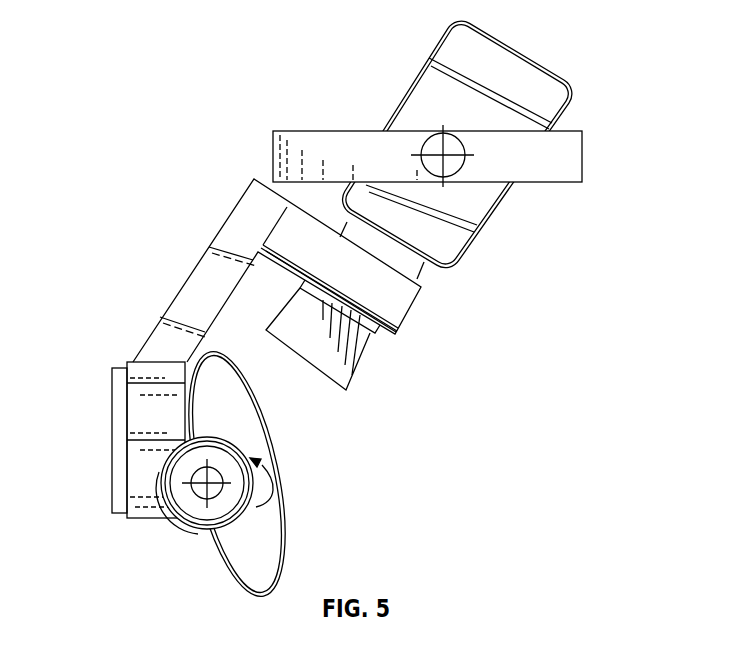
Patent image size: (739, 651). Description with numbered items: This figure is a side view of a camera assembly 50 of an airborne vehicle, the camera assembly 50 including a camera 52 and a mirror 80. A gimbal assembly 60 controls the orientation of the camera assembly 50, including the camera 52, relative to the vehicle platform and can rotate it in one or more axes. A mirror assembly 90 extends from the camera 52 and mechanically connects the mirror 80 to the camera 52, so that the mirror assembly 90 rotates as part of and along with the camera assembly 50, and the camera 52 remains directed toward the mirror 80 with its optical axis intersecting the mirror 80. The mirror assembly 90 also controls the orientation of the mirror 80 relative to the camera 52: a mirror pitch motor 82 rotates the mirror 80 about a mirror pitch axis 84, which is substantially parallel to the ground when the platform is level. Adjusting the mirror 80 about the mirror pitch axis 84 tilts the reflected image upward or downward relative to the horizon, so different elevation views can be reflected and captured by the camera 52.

The camera assembly 50 is at (528, 60).
The gimbal assembly 60 is at (570, 131).
The camera 52 is at (357, 367).
The mirror assembly 90 is at (112, 443).
The mirror 80 is at (281, 528).
The mirror pitch motor 82 is at (211, 530).
The mirror pitch axis 84 is at (222, 470).